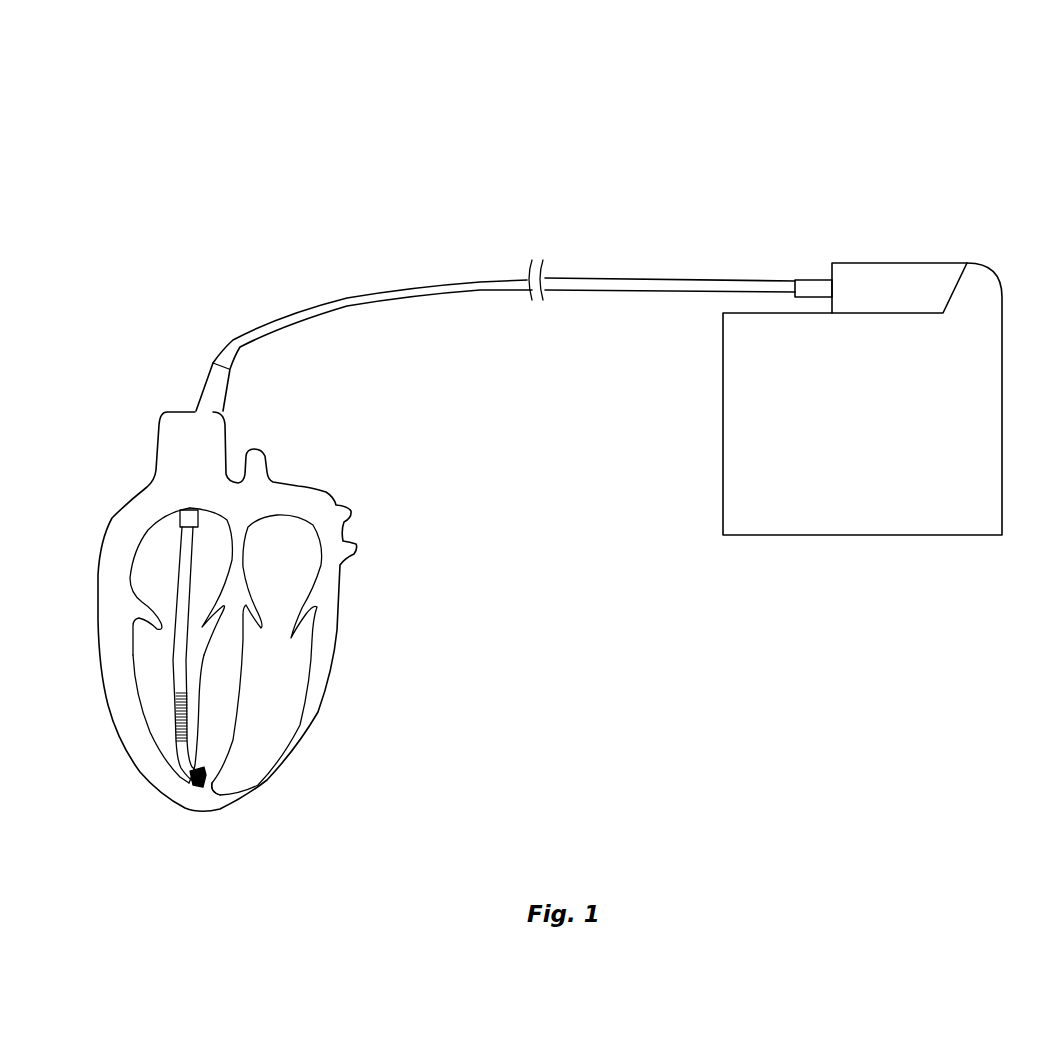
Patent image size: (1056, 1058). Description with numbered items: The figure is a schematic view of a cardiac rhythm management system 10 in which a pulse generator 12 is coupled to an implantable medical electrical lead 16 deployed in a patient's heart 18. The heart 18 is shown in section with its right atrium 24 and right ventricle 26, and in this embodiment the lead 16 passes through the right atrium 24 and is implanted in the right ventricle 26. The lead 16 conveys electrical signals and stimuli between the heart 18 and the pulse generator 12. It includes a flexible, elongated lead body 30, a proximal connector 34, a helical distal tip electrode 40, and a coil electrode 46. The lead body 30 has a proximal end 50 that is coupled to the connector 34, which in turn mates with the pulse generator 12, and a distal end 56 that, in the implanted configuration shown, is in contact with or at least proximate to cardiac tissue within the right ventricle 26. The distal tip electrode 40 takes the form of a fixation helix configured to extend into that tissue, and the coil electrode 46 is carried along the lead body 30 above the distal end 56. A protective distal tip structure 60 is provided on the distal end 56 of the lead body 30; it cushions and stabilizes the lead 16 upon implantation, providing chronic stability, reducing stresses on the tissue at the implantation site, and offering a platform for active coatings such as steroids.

The cardiac rhythm management (CRM) system 10 is at (345, 208).
The pulse generator 12 is at (1013, 399).
The implantable medical electrical lead 16 is at (603, 264).
The heart 18 is at (332, 722).
The right atrium 24 is at (152, 548).
The right ventricle 26 is at (157, 700).
The lead body 30 is at (424, 273).
The proximal connector 34 is at (812, 280).
The helical distal tip electrode 40 is at (203, 787).
The coil electrode 46 is at (177, 722).
The proximal end 50 is at (782, 280).
The distal end 56 is at (185, 776).
The protective distal tip structure 60 is at (215, 777).